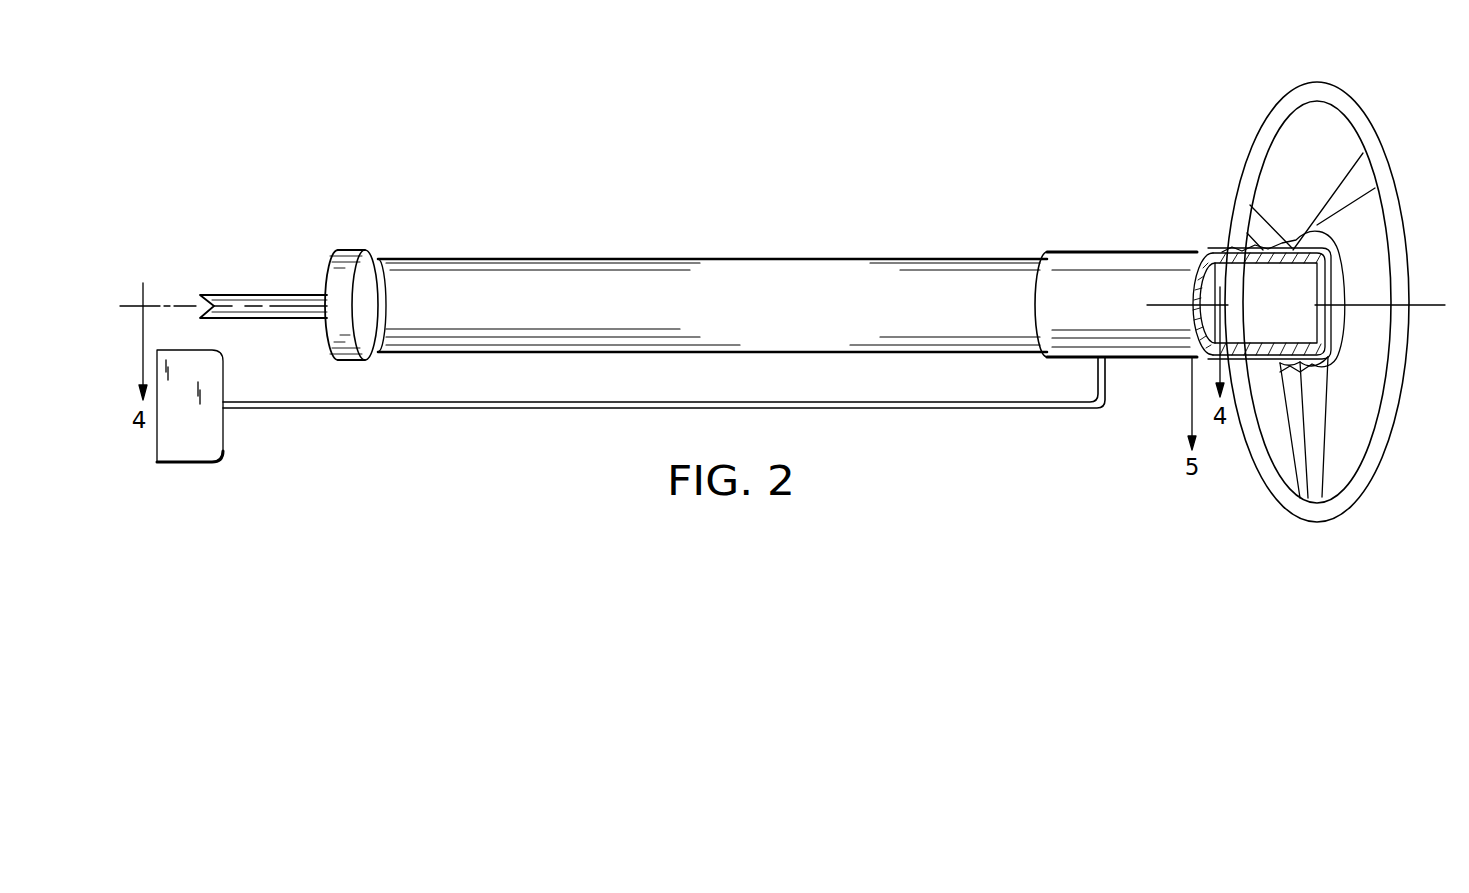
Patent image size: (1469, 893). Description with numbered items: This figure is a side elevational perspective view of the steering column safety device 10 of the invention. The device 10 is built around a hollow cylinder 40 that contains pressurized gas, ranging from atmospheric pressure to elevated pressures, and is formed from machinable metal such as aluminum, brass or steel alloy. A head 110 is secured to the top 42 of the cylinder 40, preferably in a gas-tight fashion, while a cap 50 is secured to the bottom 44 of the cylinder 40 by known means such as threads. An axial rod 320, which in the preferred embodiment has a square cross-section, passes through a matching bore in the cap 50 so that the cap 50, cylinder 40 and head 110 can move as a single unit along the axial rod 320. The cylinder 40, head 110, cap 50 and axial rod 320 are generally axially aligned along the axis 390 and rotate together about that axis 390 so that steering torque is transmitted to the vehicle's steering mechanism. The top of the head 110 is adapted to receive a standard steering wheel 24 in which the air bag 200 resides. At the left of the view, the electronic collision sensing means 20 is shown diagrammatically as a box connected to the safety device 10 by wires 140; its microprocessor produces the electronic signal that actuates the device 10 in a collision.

The steering column safety device 10 is at (763, 202).
The electronic collision sensing means 20 is at (205, 350).
The steering wheel 24 is at (1315, 82).
The hollow cylinder 40 is at (497, 355).
The top of cylinder 42 is at (988, 253).
The bottom of cylinder 44 is at (386, 262).
The cap 50 is at (335, 340).
The head 110 is at (1128, 358).
The wires 140 is at (913, 410).
The air bag 200 is at (1196, 270).
The axial rod 320 is at (242, 295).
The axis 390 is at (184, 306).